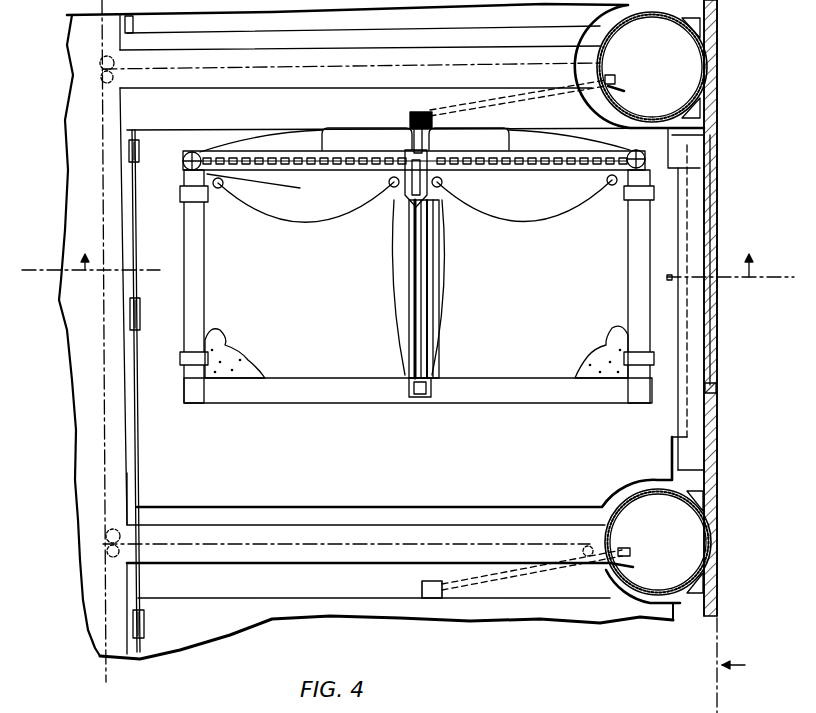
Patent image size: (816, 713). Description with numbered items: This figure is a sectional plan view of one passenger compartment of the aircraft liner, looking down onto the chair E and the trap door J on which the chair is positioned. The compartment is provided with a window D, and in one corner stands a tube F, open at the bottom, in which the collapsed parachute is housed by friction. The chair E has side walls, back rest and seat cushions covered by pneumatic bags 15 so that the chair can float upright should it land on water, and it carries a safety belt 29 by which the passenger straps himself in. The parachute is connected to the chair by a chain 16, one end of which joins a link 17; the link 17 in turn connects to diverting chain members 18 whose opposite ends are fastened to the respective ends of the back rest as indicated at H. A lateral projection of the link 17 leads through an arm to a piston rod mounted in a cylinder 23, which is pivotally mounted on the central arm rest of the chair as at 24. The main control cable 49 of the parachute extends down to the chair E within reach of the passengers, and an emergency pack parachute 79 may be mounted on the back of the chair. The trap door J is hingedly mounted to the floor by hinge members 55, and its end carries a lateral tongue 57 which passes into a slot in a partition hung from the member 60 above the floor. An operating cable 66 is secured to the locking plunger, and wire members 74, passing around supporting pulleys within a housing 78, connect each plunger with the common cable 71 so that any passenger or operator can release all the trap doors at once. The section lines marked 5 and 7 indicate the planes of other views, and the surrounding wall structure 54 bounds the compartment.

The wall of building 54 is at (110, 124).
The hinge member 55 is at (140, 149).
The wire member 74 is at (212, 70).
The housing 78 is at (273, 77).
The emergency pack parachute 79 is at (378, 126).
The chain 16 is at (610, 78).
The tube F is at (698, 61).
The main control cable 49 is at (560, 97).
The operating cable 66 is at (712, 135).
The back rest end connection H is at (186, 166).
The pneumatic bag 15 is at (267, 180).
The diverting chain member 18 is at (300, 168).
The link 17 is at (405, 185).
The safety belt 29 is at (308, 226).
The cylinder 23 is at (424, 258).
The pivot mounting 24 is at (418, 396).
The chair E is at (533, 386).
The trap door J is at (306, 534).
The section line 5 is at (408, 255).
The lateral tongue 57 is at (690, 335).
The window D is at (720, 366).
The member 60 is at (694, 453).
The cable 71 is at (106, 617).
The section line 7 is at (716, 665).